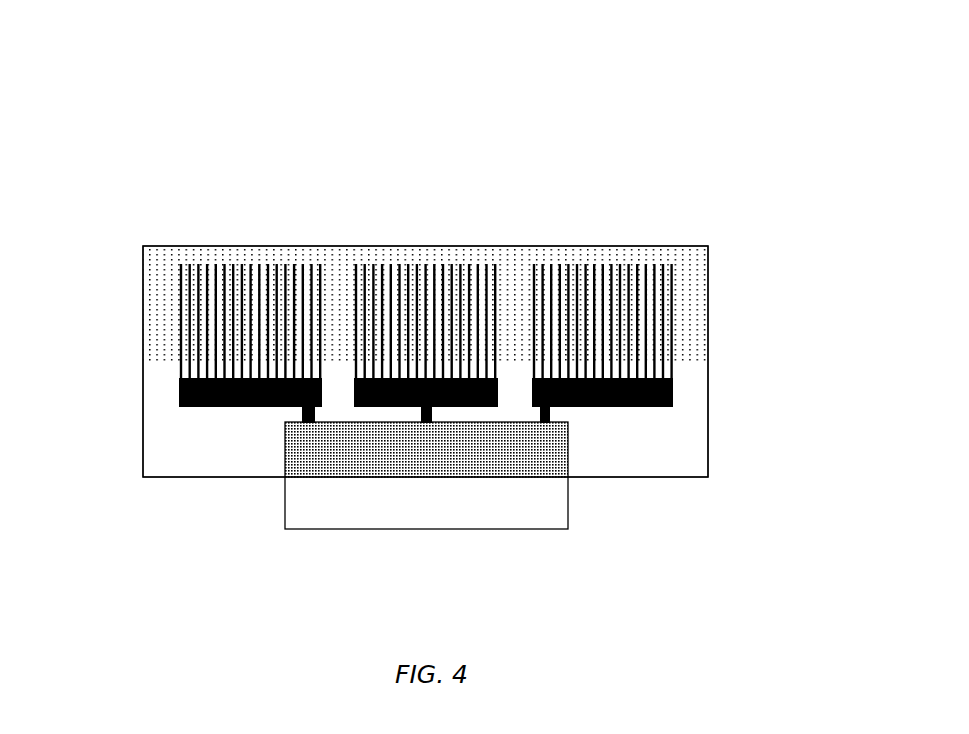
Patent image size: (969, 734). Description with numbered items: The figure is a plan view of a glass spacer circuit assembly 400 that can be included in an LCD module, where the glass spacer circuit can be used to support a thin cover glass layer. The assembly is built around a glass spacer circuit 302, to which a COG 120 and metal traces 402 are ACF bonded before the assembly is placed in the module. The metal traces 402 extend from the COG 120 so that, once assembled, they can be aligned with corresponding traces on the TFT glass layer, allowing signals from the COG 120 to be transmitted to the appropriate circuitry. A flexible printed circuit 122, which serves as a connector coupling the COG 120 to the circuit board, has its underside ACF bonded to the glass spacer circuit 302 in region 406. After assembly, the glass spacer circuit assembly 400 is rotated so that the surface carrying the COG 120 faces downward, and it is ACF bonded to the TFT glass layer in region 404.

The glass spacer circuit assembly 400 is at (175, 127).
The glass spacer circuit 302 is at (143, 460).
The metal traces 402 is at (180, 306).
The region 404 is at (690, 318).
The COG 120 is at (180, 394).
The region 406 is at (483, 450).
The flexible printed circuit 122 is at (285, 504).